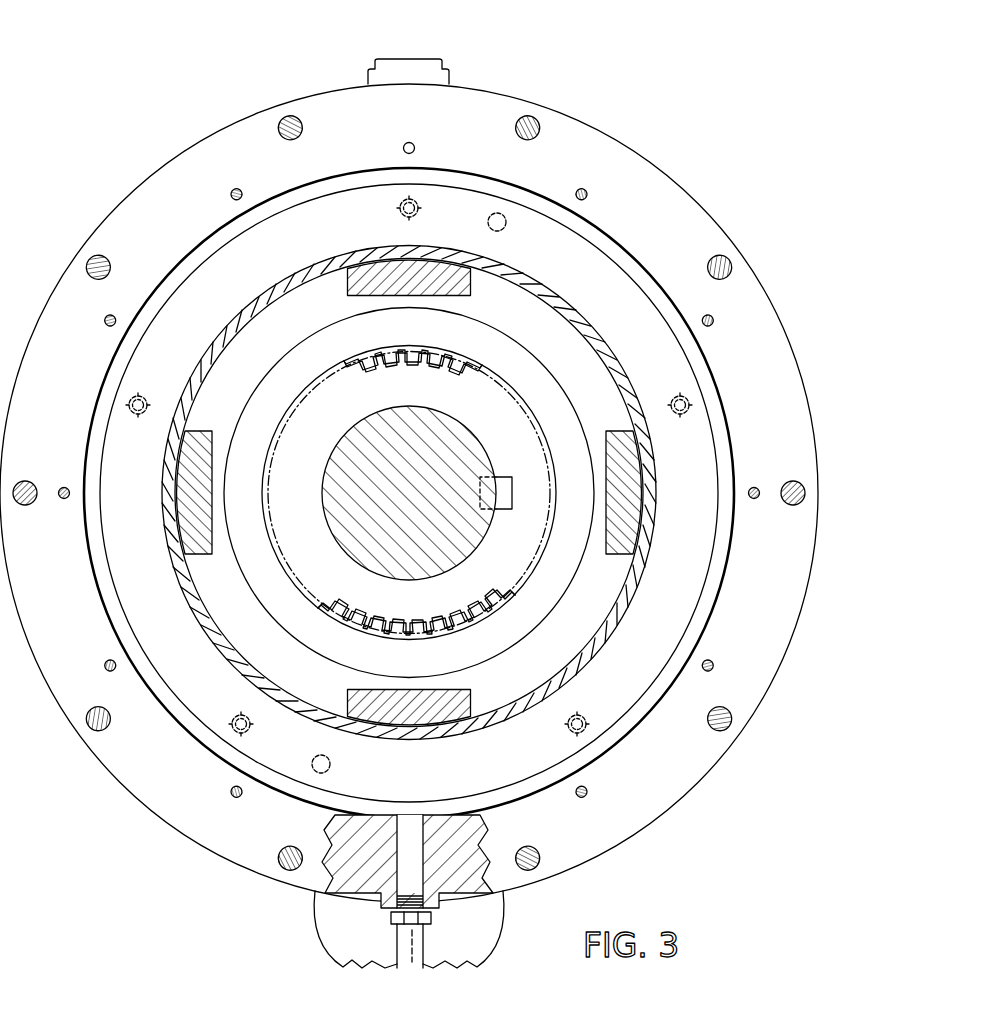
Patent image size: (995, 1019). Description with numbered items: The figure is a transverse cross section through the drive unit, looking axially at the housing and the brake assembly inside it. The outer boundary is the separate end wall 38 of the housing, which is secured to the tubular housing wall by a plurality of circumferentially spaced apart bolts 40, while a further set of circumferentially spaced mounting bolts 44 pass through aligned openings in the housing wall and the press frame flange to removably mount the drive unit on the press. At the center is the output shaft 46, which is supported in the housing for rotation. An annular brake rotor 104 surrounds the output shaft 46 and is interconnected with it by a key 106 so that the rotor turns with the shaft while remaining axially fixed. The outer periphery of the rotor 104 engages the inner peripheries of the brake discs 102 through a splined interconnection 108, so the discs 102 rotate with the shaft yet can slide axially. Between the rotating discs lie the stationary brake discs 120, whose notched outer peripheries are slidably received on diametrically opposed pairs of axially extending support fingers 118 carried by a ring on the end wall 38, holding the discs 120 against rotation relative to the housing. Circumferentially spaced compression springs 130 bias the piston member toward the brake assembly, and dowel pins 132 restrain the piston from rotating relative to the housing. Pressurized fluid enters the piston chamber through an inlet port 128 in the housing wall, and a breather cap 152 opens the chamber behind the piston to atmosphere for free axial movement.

The end wall 38 is at (483, 890).
The bolts 40 is at (592, 190).
The mounting bolts 44 is at (537, 122).
The output shaft 46 is at (462, 469).
The brake discs 102 is at (512, 630).
The brake rotor 104 is at (512, 560).
The key 106 is at (495, 507).
The splined interconnection 108 is at (465, 366).
The support fingers 118 is at (378, 262).
The brake discs 120 is at (600, 601).
The inlet port 128 is at (405, 872).
The compression springs 130 is at (417, 200).
The dowel pins 132 is at (315, 773).
The breather cap 152 is at (423, 58).